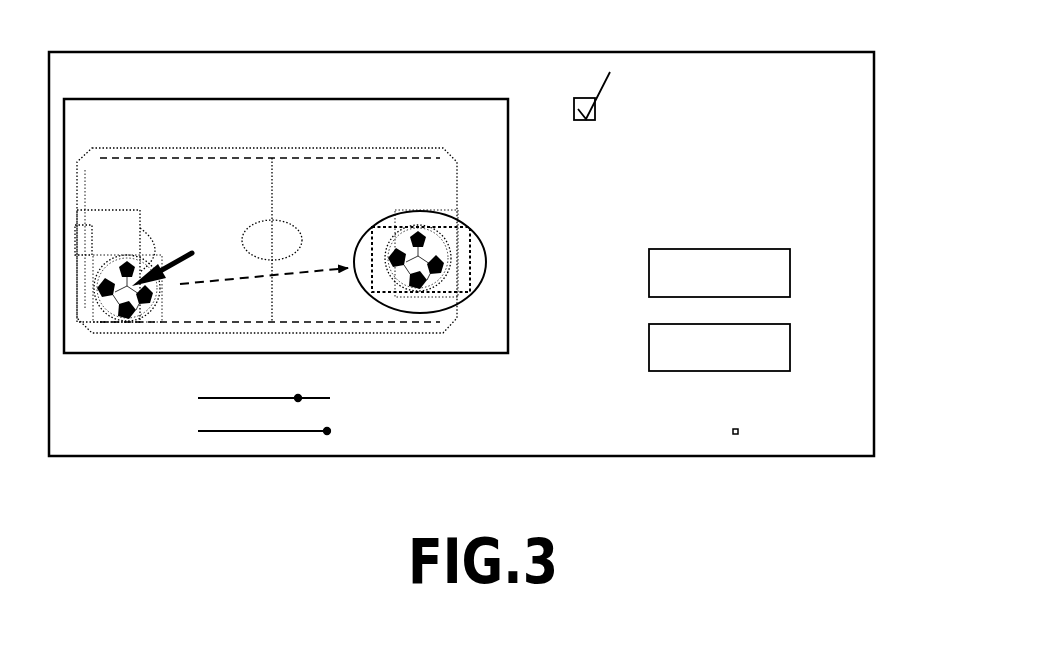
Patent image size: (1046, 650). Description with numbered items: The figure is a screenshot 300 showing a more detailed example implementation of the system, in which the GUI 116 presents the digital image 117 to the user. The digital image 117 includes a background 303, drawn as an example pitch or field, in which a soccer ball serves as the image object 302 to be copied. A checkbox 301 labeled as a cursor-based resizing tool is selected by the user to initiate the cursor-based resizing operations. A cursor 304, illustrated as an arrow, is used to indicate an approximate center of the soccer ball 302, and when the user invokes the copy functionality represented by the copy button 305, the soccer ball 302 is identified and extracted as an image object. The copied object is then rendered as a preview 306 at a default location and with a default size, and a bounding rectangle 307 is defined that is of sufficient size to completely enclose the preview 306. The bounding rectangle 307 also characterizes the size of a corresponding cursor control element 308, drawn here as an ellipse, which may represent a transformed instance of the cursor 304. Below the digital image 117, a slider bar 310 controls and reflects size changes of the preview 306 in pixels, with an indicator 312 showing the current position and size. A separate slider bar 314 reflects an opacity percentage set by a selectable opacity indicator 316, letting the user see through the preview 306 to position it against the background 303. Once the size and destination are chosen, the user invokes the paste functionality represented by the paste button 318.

The screenshot 300 is at (802, 28).
The GUI 116 is at (150, 88).
The digital image 117 is at (266, 133).
The checkbox 301 is at (679, 150).
The image object 302 is at (98, 314).
The background 303 is at (364, 146).
The cursor 304 is at (158, 253).
The copy button 305 is at (701, 244).
The preview 306 is at (455, 235).
The bounding rectangle 307 is at (456, 299).
The cursor control element 308 is at (372, 214).
The slider bar 310 is at (122, 394).
The indicator 312 is at (286, 393).
The slider bar 314 is at (99, 439).
The opacity indicator 316 is at (326, 435).
The paste button 318 is at (705, 374).